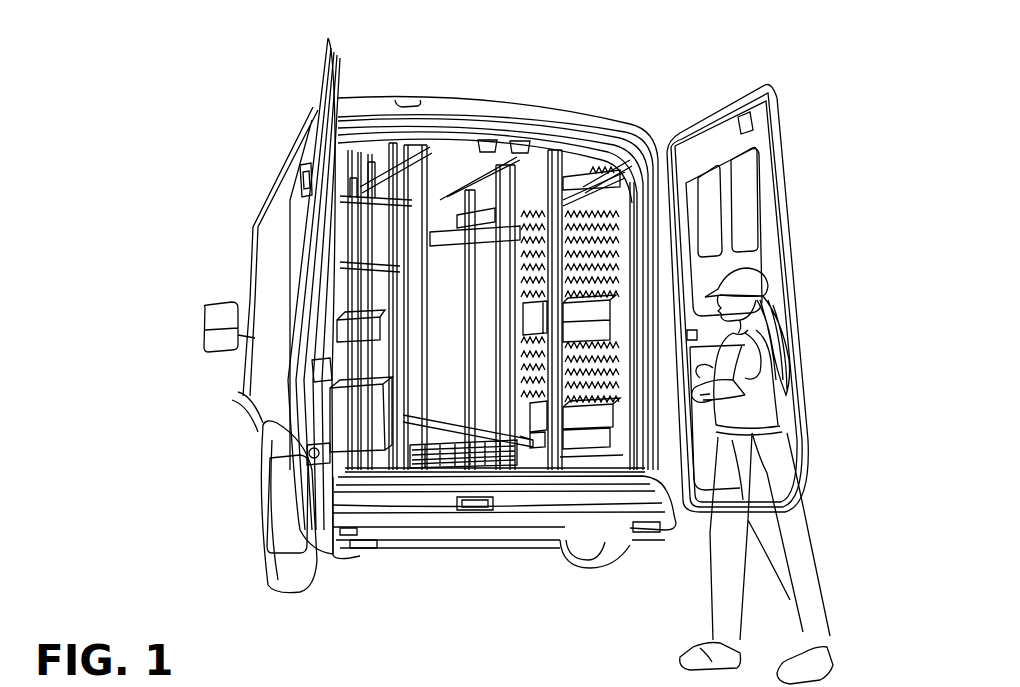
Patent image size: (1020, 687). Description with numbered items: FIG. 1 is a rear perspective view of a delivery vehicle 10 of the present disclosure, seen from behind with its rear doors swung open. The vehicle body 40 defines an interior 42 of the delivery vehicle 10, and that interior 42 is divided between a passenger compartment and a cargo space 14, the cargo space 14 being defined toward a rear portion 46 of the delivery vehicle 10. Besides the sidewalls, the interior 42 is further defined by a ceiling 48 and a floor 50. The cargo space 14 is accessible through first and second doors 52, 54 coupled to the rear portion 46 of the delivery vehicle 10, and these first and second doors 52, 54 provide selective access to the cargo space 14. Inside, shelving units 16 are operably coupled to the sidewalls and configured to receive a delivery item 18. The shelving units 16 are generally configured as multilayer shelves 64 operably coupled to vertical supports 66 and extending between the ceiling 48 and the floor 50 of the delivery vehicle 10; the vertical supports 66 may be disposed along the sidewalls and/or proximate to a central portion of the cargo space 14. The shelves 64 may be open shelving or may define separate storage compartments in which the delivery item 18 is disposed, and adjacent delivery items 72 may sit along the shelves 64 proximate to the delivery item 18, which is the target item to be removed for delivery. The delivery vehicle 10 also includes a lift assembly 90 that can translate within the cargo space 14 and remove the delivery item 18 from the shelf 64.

The delivery vehicle 10 is at (173, 99).
The cargo space 14 is at (455, 155).
The shelving unit 16 is at (541, 452).
The delivery item 18 is at (590, 422).
The vehicle body 40 is at (270, 178).
The interior 42 is at (413, 222).
The rear portion 46 is at (611, 125).
The ceiling 48 is at (541, 165).
The floor 50 is at (363, 467).
The first door 52 is at (318, 72).
The second door 54 is at (780, 162).
The shelves 64 is at (343, 222).
The vertical supports 66 is at (395, 266).
The adjacent delivery items 72 is at (577, 442).
The lift assembly 90 is at (487, 460).